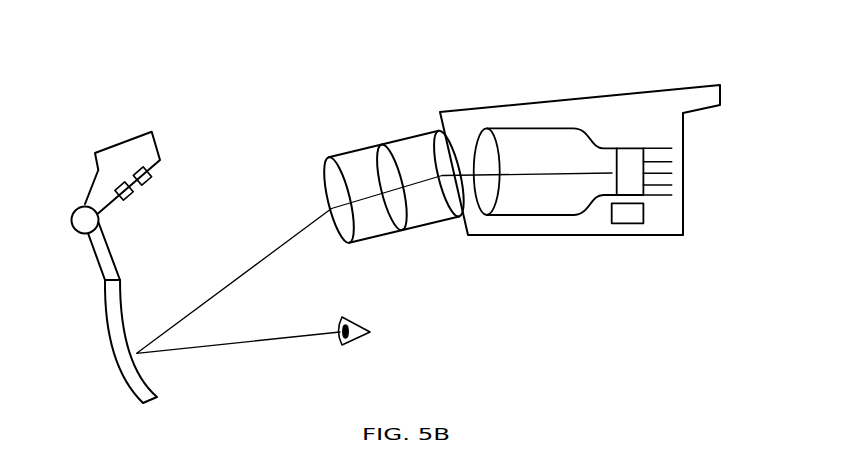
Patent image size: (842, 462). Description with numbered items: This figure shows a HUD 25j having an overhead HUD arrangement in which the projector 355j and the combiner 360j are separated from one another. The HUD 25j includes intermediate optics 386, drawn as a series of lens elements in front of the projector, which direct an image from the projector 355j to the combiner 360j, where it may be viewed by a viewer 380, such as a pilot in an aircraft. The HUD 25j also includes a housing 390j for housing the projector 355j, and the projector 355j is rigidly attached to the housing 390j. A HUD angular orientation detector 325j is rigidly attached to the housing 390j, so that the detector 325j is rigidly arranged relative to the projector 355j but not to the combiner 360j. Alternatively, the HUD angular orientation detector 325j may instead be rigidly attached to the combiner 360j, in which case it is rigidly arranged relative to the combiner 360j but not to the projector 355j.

The HUD 25j is at (288, 97).
The combiner 360j is at (136, 388).
The viewer 380 is at (352, 323).
The intermediate optics 386 is at (430, 127).
The housing 390j is at (648, 95).
The projector 355j is at (535, 137).
The HUD angular orientation detector 325j is at (622, 225).